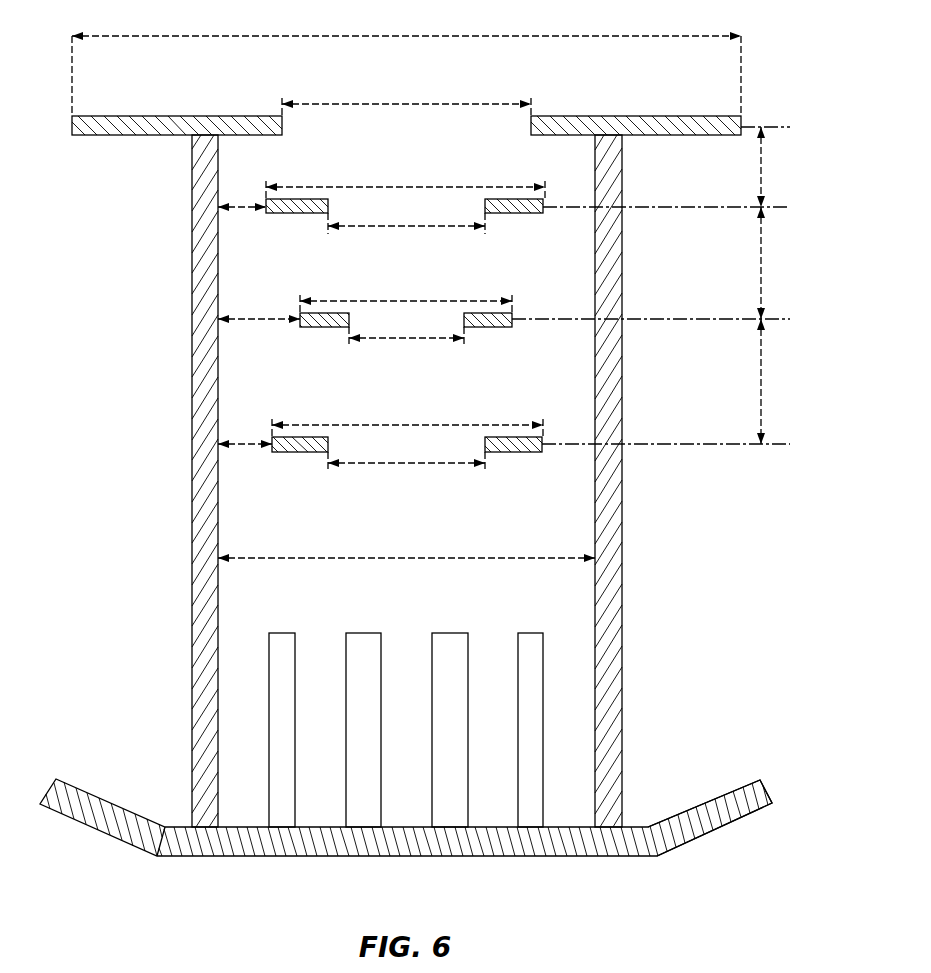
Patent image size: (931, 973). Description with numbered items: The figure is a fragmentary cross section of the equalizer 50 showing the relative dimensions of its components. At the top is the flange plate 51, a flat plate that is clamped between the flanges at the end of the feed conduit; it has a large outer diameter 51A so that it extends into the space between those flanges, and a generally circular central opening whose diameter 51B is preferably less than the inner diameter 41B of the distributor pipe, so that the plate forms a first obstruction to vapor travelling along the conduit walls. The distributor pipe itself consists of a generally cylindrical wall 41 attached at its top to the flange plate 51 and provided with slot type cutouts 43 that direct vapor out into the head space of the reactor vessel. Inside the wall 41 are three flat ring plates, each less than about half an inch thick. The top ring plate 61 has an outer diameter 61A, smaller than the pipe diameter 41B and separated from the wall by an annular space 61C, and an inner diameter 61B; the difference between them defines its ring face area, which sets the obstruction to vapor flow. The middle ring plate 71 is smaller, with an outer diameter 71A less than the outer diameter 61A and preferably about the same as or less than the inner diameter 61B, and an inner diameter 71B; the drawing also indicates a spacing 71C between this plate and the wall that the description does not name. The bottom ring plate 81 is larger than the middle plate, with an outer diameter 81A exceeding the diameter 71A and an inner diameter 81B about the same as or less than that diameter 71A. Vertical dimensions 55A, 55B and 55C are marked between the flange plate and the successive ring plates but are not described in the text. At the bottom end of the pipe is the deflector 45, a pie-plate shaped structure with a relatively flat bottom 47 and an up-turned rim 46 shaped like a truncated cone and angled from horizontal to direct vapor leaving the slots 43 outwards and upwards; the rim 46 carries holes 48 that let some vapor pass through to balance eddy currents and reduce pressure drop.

The generally cylindrical wall 41 is at (622, 648).
The inner diameter of the distributor pipe 41B is at (405, 558).
The slot type cutouts 43 is at (375, 633).
The deflector 45 is at (155, 859).
The up-turned rim 46 is at (725, 815).
The relatively flat bottom 47 is at (405, 857).
The holes 48 is at (85, 798).
The equalizer 50 is at (252, 285).
The flange plate 51 is at (205, 116).
The outer diameter of the flange plate 51A is at (545, 36).
The diameter of the generally circular opening 51B is at (425, 104).
The first vertical spacing 55A is at (761, 166).
The second vertical spacing 55B is at (761, 263).
The third vertical spacing 55C is at (761, 370).
The top ring plate 61 is at (292, 213).
The outer diameter of the top ring plate 61A is at (475, 187).
The inner diameter of the top ring plate 61B is at (392, 226).
The annular space 61C is at (242, 209).
The middle ring plate 71 is at (318, 327).
The outer diameter of the middle ring plate 71A is at (445, 301).
The inner diameter of the middle ring plate 71B is at (392, 338).
The rib wall offset 71C is at (255, 321).
The bottom ring plate 81 is at (300, 452).
The outer diameter of the bottom ring plate 81A is at (445, 425).
The inner diameter of the bottom ring plate 81B is at (392, 463).